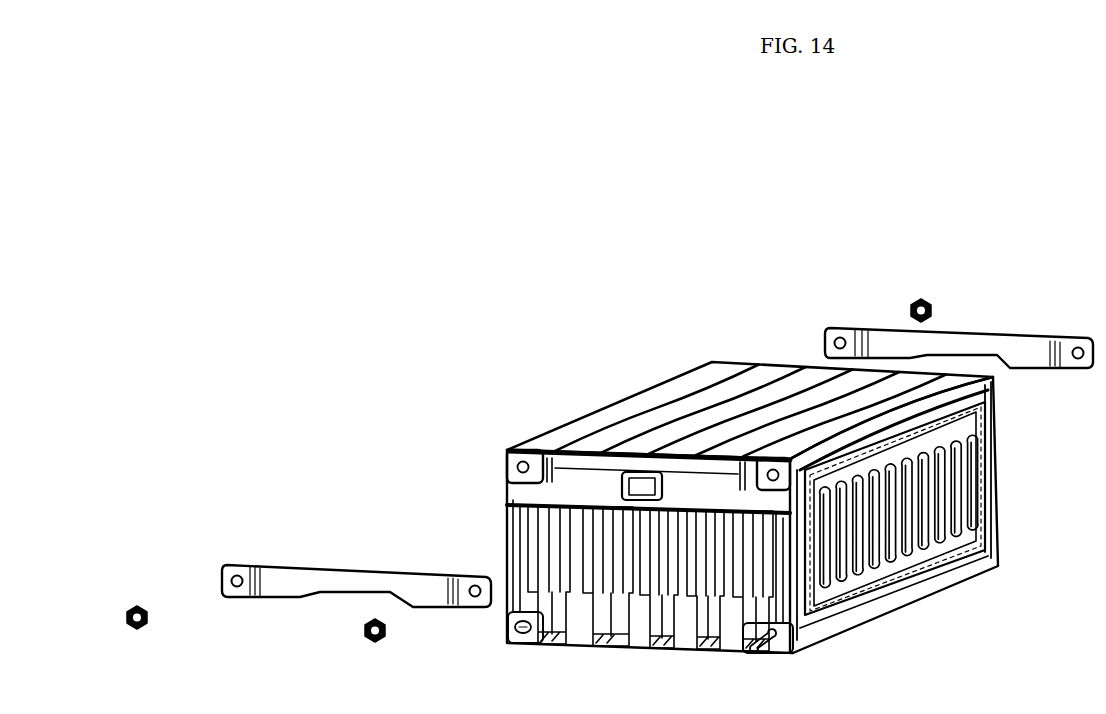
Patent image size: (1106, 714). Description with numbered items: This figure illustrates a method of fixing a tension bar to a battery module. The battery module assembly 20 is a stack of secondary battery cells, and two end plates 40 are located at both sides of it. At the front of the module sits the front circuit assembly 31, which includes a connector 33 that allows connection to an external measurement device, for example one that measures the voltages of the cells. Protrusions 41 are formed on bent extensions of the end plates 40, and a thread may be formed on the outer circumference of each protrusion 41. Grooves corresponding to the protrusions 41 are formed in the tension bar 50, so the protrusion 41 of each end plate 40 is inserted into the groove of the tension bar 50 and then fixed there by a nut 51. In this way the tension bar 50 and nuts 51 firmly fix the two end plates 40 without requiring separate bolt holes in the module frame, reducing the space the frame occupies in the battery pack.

The battery module assembly 20 is at (724, 366).
The front circuit assembly 31 is at (577, 480).
The connector 33 is at (637, 472).
The end plate 40 is at (998, 560).
The protrusion 41 is at (507, 468).
The tension bar 50 is at (1004, 330).
The nut 51 is at (137, 605).